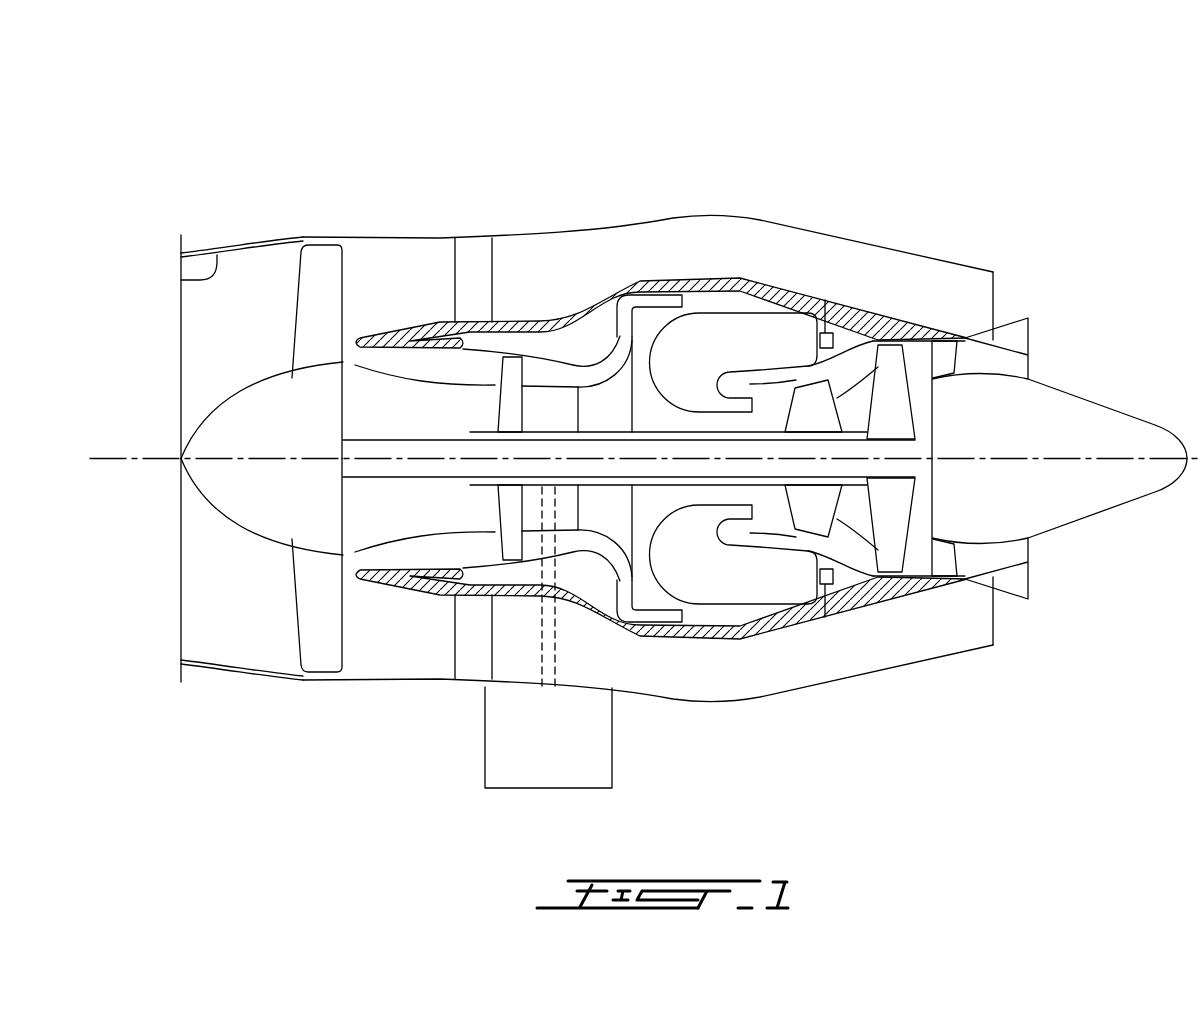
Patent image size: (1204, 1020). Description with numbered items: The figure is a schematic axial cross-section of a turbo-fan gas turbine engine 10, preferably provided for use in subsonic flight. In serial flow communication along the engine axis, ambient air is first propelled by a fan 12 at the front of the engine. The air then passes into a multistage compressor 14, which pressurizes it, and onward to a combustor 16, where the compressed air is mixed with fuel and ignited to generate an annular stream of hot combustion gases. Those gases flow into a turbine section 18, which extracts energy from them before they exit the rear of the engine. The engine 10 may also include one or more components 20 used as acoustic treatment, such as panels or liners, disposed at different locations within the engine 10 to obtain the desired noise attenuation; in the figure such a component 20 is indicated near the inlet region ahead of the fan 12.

The gas turbine engine 10 is at (898, 125).
The fan 12 is at (313, 595).
The multistage compressor 14 is at (550, 370).
The combustor 16 is at (730, 340).
The turbine section 18 is at (853, 518).
The component 20 is at (181, 279).